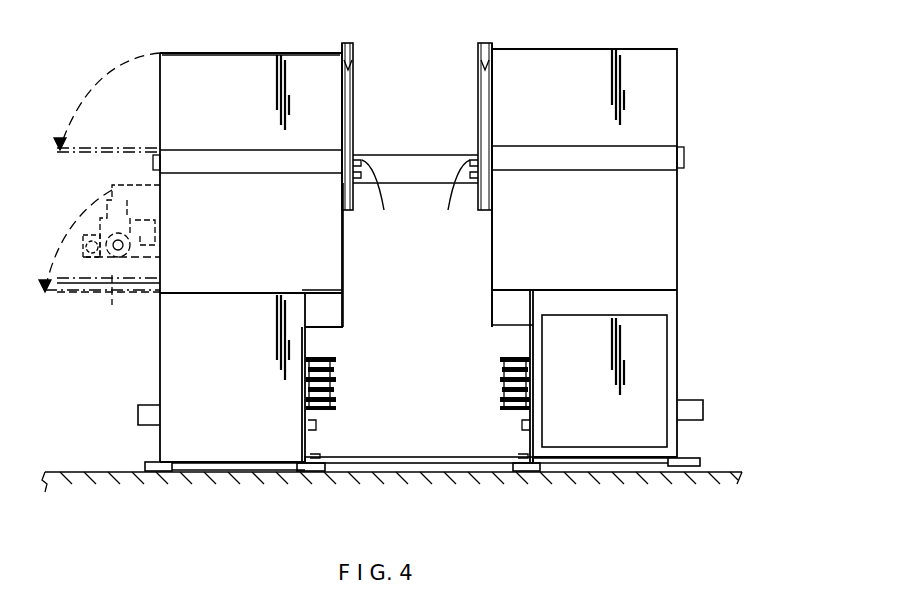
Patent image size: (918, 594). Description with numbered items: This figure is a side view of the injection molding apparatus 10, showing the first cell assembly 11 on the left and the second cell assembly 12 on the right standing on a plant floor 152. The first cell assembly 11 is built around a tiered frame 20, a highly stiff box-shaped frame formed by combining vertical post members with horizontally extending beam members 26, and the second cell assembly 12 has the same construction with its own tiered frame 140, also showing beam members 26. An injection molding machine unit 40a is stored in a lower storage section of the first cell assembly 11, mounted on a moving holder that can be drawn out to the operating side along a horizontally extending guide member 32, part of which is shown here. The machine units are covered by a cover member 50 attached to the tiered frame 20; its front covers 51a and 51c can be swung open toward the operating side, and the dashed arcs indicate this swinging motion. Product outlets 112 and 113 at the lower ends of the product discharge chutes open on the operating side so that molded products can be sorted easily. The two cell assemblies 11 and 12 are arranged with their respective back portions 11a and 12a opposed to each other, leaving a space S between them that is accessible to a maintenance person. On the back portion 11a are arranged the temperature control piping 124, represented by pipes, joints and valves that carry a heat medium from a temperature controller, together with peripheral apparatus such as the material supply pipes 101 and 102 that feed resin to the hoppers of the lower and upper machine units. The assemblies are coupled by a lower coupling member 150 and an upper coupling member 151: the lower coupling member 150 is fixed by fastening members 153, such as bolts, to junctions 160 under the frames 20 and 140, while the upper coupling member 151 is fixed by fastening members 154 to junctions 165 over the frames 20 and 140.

The injection molding apparatus 10 is at (560, 38).
The first cell assembly 11 is at (140, 361).
The back portion 11a is at (344, 273).
The second cell assembly 12 is at (680, 338).
The back portion 12a is at (492, 258).
The tiered frame 20 is at (308, 307).
The beam members 26 is at (248, 175).
The guide member 32 is at (153, 278).
The injection molding machine unit 40a is at (118, 300).
The cover member 50 is at (240, 68).
The front cover 51a is at (72, 310).
The front cover 51c is at (72, 157).
The material supply pipe 101 is at (478, 40).
The material supply pipe 102 is at (417, 126).
The product outlet 112 is at (138, 414).
The product outlet 113 is at (702, 413).
The temperature control piping 124 is at (340, 396).
The tiered frame 140 is at (527, 300).
The lower coupling member 150 is at (420, 456).
The upper coupling member 151 is at (416, 183).
The plant floor 152 is at (90, 470).
The fastening members 153 is at (317, 456).
The fastening members 154 is at (372, 160).
The junctions 160 is at (298, 472).
The junctions 165 is at (353, 158).
The space S is at (416, 125).